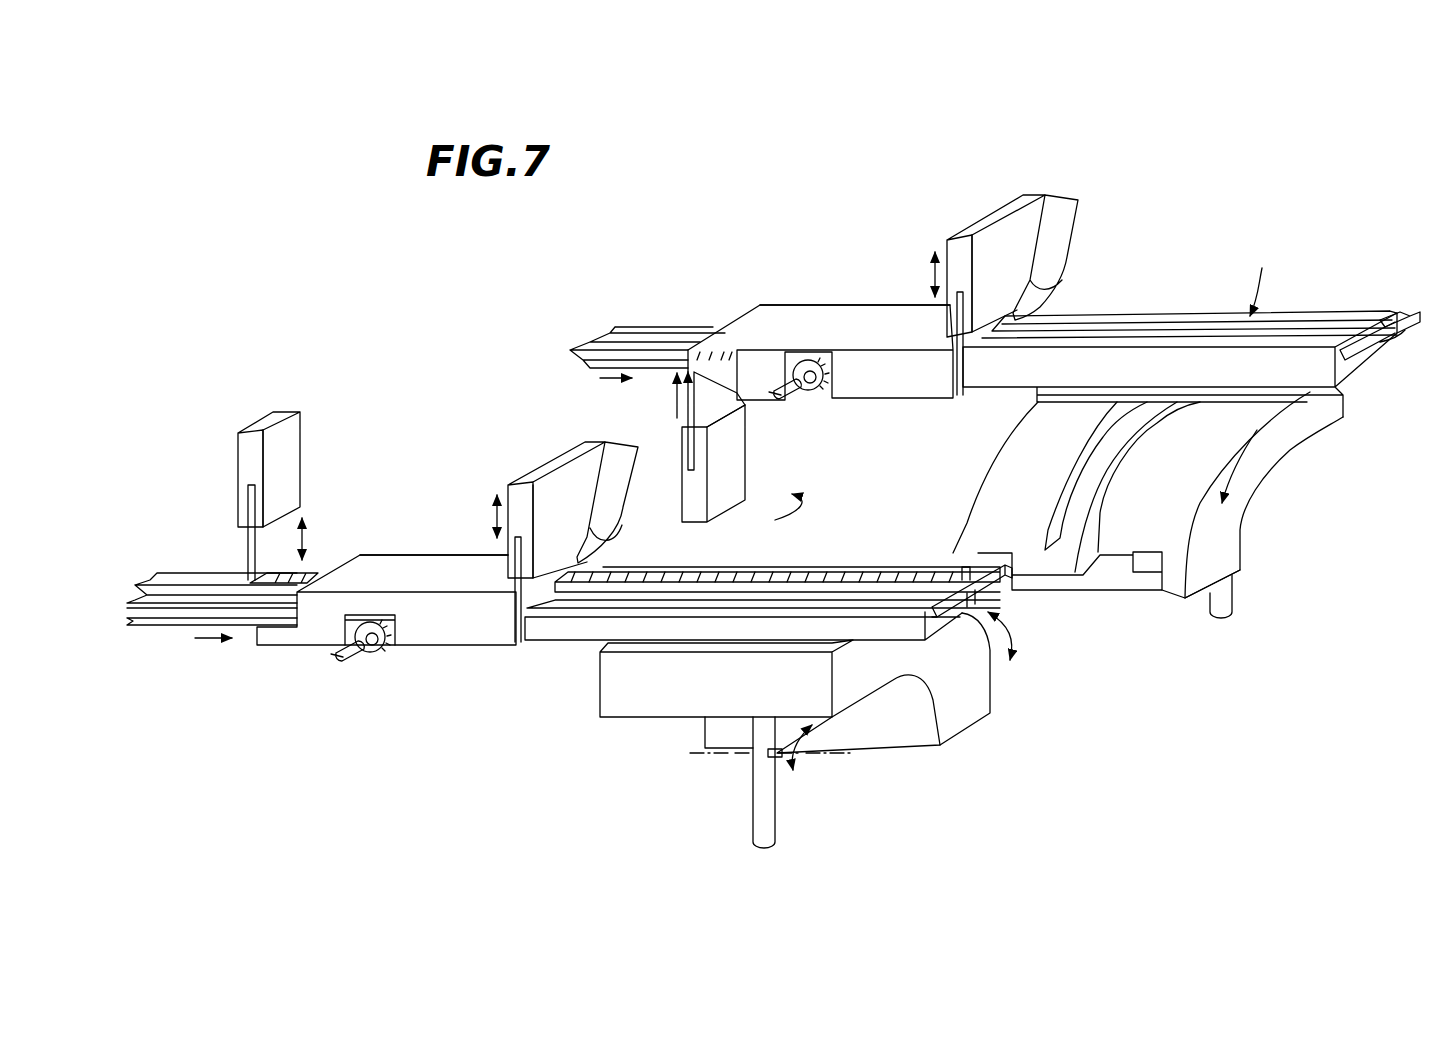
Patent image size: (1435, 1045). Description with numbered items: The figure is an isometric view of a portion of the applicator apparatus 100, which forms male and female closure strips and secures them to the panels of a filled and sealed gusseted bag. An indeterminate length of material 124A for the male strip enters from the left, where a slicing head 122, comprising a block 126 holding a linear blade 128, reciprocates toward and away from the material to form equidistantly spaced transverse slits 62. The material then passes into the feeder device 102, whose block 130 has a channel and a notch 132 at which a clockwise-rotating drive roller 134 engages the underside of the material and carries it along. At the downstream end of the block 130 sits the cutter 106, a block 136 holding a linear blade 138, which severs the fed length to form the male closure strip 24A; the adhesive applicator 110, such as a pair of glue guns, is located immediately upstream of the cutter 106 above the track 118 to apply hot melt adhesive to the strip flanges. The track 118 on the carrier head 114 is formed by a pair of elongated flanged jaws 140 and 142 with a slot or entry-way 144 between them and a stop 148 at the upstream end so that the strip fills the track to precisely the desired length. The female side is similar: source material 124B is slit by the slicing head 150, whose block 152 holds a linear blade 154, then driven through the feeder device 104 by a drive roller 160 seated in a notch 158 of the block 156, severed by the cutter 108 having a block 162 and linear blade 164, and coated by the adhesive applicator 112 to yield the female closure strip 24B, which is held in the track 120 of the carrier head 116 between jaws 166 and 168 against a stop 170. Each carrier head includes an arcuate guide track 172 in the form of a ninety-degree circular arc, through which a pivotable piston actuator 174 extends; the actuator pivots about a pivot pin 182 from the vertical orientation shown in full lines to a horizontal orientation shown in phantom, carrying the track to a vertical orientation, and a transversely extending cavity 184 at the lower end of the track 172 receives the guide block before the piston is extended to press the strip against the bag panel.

The applicator apparatus 100 is at (640, 238).
The feeder device 102 is at (298, 637).
The feeder device 104 is at (762, 333).
The cutter 106 is at (508, 478).
The cutter 108 is at (1036, 192).
The adhesive applicator 110 is at (618, 480).
The adhesive applicator 112 is at (1052, 232).
The carrier head 114 is at (975, 735).
The carrier head 116 is at (1187, 603).
The track 118 is at (630, 645).
The track 120 is at (1145, 380).
The slicing head 122 is at (285, 410).
The indeterminate length of material 124A is at (177, 625).
The source material 124B is at (583, 370).
The block 126 is at (248, 455).
The linear blade 128 is at (247, 540).
The block 130 is at (405, 558).
The notch 132 is at (393, 643).
The drive roller 134 is at (356, 650).
The block 136 is at (568, 497).
The linear blade 138 is at (543, 598).
The flanged jaw 140 is at (870, 640).
The flanged jaw 142 is at (988, 593).
The slot or entry-way 144 is at (938, 622).
The stop 148 is at (985, 573).
The slicing head 150 is at (743, 478).
The block 152 is at (735, 478).
The linear blade 154 is at (720, 400).
The block 156 is at (877, 325).
The notch 158 is at (830, 355).
The drive roller 160 is at (813, 388).
The block 162 is at (997, 277).
The linear blade 164 is at (952, 368).
The jaw 166 is at (1322, 378).
The jaw 168 is at (1385, 355).
The stop 170 is at (1402, 318).
The arcuate guide track 172 is at (1087, 478).
The piston actuator 174 is at (1222, 598).
The pivot pin 182 is at (762, 752).
The cavity 184 is at (1118, 588).
The male closure strip 24A is at (838, 566).
The female closure strip 24B is at (1189, 283).
The transverse slits 62 is at (308, 580).